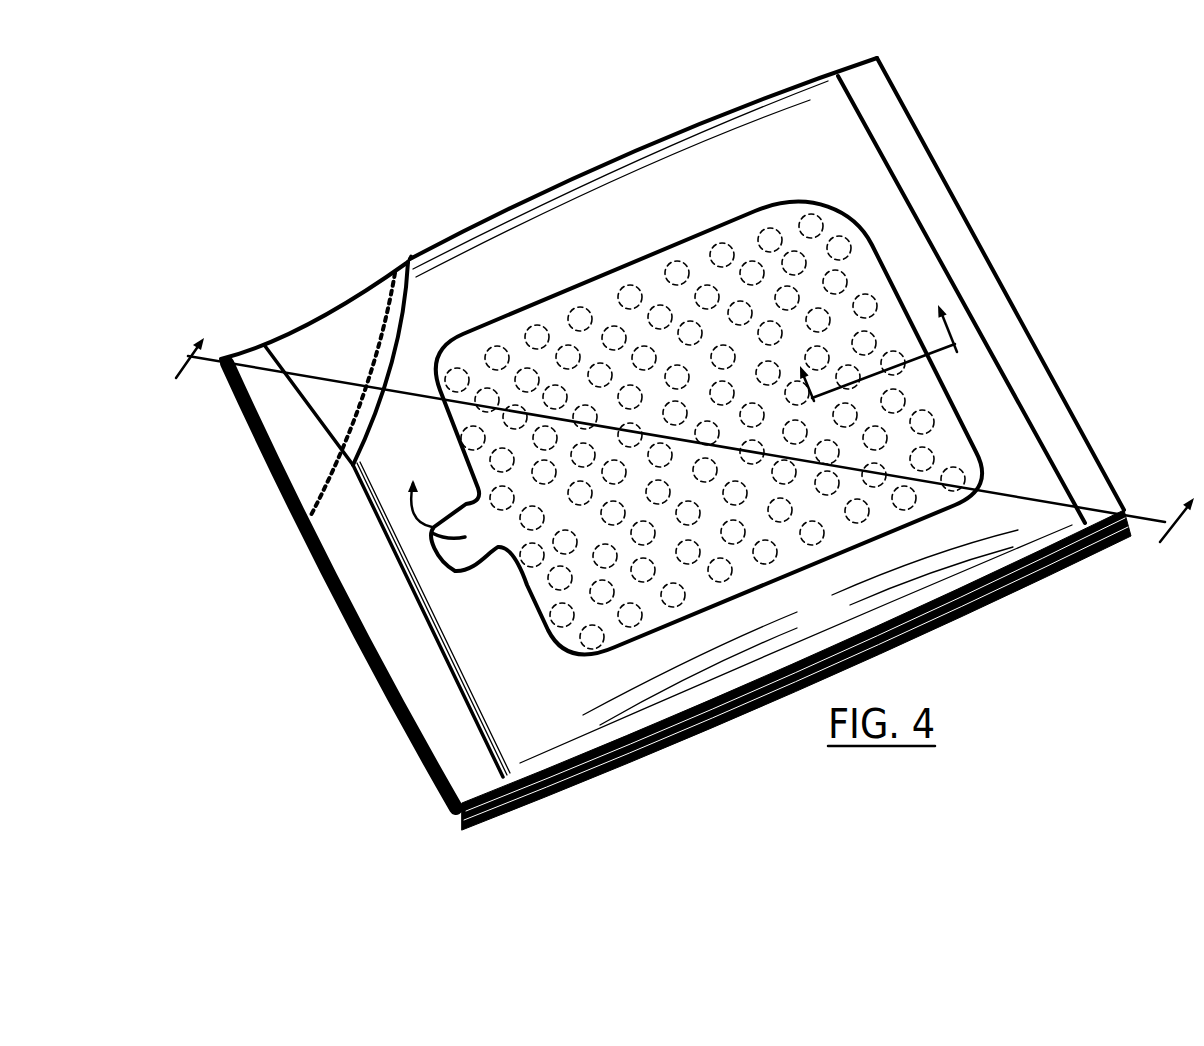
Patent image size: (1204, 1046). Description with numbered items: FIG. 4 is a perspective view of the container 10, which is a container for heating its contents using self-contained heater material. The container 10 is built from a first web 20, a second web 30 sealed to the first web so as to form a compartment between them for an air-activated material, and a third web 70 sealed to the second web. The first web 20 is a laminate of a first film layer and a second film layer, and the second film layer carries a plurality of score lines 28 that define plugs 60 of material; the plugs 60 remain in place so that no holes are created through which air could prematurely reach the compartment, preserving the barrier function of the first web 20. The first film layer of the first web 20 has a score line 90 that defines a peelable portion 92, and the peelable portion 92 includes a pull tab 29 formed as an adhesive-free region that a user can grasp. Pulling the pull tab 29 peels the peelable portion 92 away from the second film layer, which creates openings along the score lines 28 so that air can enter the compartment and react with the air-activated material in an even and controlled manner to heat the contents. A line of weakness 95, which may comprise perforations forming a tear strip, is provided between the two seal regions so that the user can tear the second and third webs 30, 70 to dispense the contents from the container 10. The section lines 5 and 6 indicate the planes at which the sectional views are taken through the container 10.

The container 10 is at (1065, 315).
The first web 20 is at (447, 300).
The score lines 28 is at (935, 417).
The pull tab 29 is at (465, 545).
The second web 30 is at (310, 347).
The plugs 60 is at (840, 247).
The third web 70 is at (408, 716).
The score line 90 is at (557, 291).
The peelable portion 92 is at (653, 270).
The line of weakness 95 is at (350, 438).
The section line 5- 5 is at (888, 381).
The section line 6- 6 is at (677, 452).